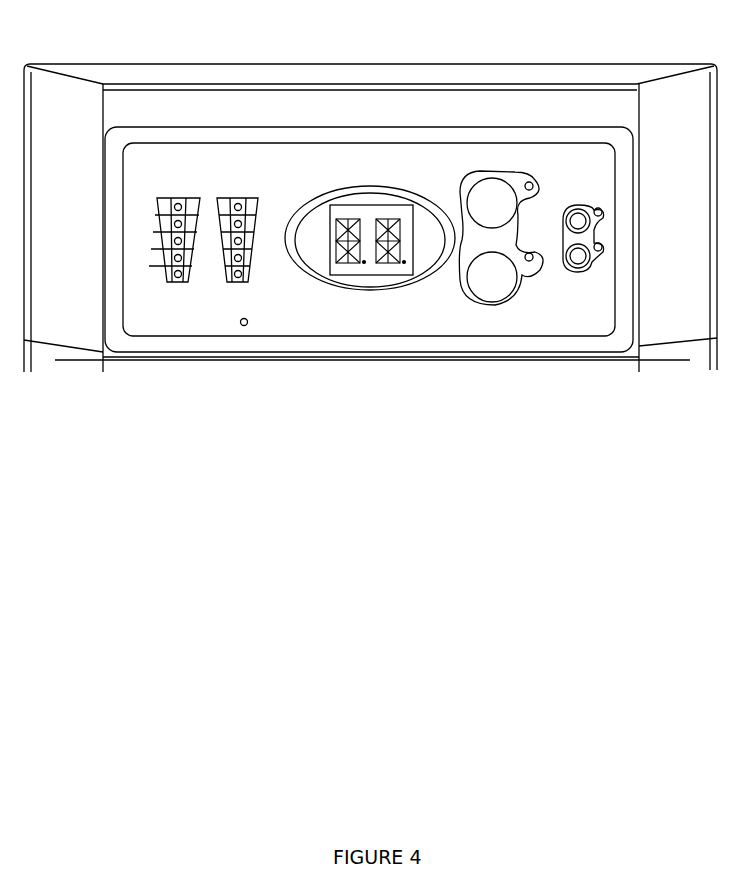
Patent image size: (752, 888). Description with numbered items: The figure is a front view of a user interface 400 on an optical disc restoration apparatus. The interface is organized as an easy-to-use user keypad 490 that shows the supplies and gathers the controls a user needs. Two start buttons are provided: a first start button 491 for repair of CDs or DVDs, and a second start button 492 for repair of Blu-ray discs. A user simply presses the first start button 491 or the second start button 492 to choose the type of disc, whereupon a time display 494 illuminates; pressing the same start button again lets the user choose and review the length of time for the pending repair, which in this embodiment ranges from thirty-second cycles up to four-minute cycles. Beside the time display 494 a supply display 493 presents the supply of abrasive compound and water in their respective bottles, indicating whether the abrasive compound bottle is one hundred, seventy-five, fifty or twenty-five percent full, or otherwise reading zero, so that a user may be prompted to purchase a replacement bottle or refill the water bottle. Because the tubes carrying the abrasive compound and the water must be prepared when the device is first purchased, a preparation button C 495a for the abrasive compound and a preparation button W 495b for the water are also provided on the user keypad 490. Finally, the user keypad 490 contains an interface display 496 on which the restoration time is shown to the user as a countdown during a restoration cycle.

The hair removal device 400 is at (581, 713).
The user keypad 490 is at (423, 320).
The first start button 491 is at (494, 195).
The second start button 492 is at (505, 290).
The supply display 493 is at (180, 283).
The time display 494 is at (247, 283).
The preparation button C 495a is at (590, 205).
The preparation button W 495b is at (578, 268).
The interface display 496 is at (371, 290).